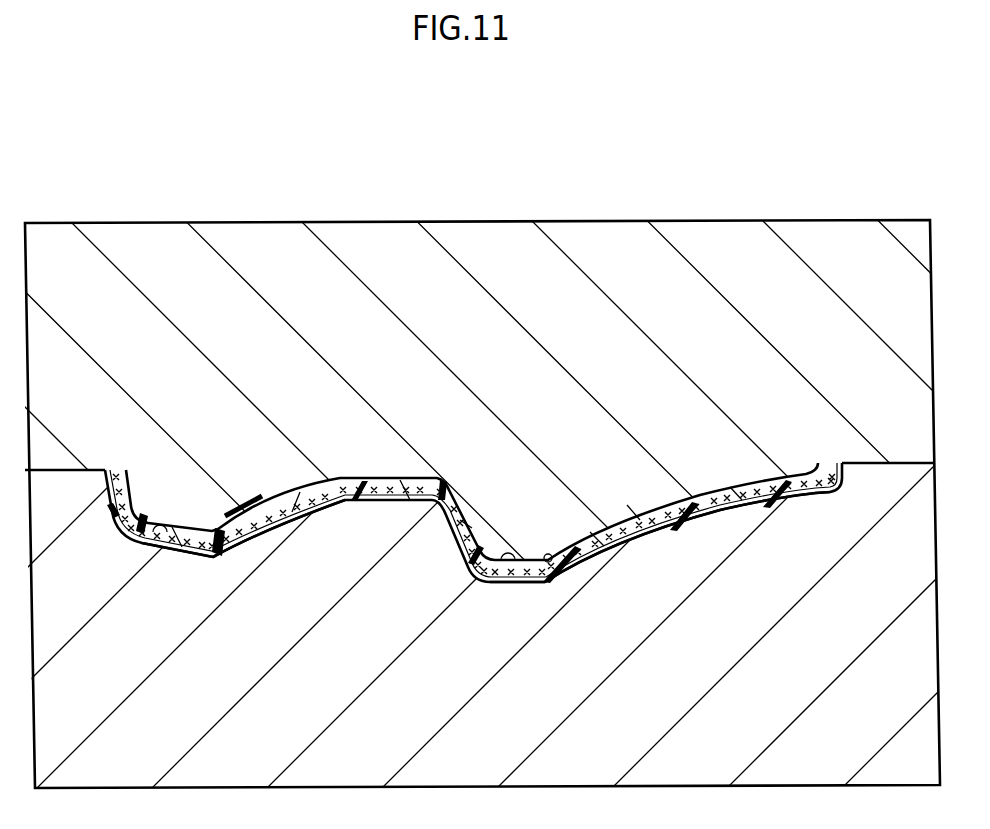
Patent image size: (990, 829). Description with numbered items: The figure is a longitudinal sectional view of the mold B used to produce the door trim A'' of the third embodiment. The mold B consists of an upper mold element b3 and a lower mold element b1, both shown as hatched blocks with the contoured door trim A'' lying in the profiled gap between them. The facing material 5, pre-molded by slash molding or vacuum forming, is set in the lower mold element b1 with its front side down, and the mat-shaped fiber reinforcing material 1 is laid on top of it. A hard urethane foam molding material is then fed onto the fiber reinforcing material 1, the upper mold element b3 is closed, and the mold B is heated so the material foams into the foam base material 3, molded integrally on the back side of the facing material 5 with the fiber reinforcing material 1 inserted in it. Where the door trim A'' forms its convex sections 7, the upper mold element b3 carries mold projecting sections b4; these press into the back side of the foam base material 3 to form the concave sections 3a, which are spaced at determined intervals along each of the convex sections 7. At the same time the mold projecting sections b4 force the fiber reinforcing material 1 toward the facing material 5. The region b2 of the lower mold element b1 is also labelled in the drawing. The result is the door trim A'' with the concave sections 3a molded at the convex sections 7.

The fiber reinforcing material 1 is at (340, 492).
The foam base material 3 is at (277, 502).
The concave sections 3a is at (217, 530).
The facing material 5 is at (732, 522).
The convex sections 7 is at (199, 559).
The lower mold element b1 is at (238, 779).
The recess bottom portion b2 is at (150, 538).
The upper mold element b3 is at (263, 236).
The mold projecting sections b4 is at (225, 541).
The door trim A'' is at (754, 560).
The mold B is at (402, 149).